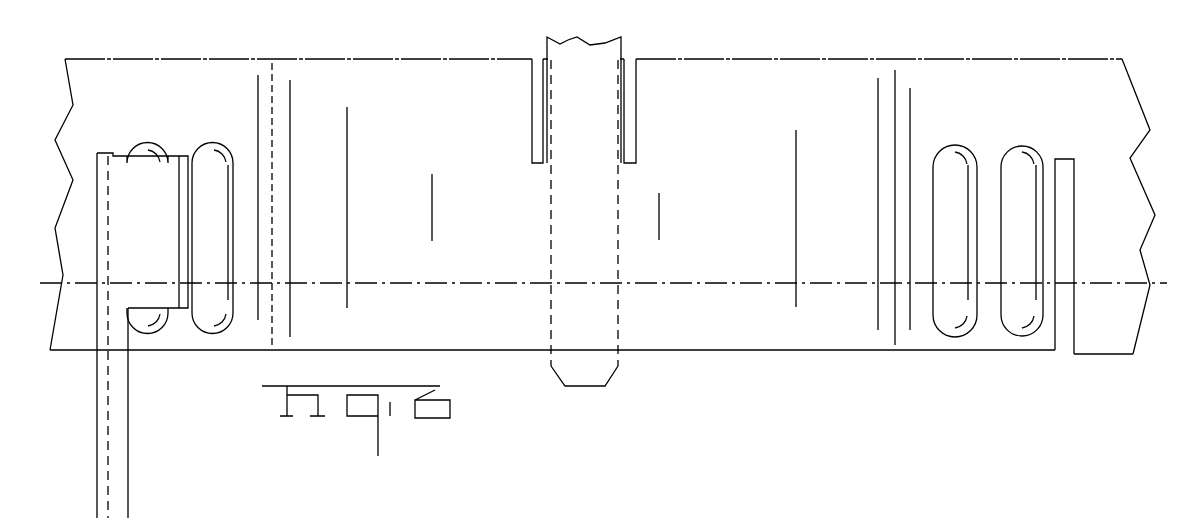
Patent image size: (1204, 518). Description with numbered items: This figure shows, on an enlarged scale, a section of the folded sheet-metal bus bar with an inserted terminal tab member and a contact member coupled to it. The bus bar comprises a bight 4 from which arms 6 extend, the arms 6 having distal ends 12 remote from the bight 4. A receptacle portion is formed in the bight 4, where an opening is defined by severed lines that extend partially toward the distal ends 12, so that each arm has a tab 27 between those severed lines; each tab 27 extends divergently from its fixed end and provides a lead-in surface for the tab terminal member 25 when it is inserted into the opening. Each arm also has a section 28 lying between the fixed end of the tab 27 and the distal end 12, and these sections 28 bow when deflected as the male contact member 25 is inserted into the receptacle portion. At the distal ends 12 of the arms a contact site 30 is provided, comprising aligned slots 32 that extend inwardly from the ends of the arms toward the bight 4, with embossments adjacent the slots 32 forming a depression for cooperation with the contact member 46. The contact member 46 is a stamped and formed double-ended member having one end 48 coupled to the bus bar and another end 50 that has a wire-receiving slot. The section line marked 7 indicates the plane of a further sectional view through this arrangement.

The bight 4 is at (800, 60).
The arms 6 is at (686, 303).
The section line 7- 7 is at (1167, 191).
The distal ends 12 is at (762, 352).
The tab terminal member 25 is at (598, 51).
The tab 27 is at (584, 289).
The section 28 is at (589, 272).
The contact site 30 is at (157, 356).
The slots 32 is at (1066, 187).
The contact member 46 is at (165, 183).
The one end 48 is at (96, 190).
The another end 50 is at (97, 453).